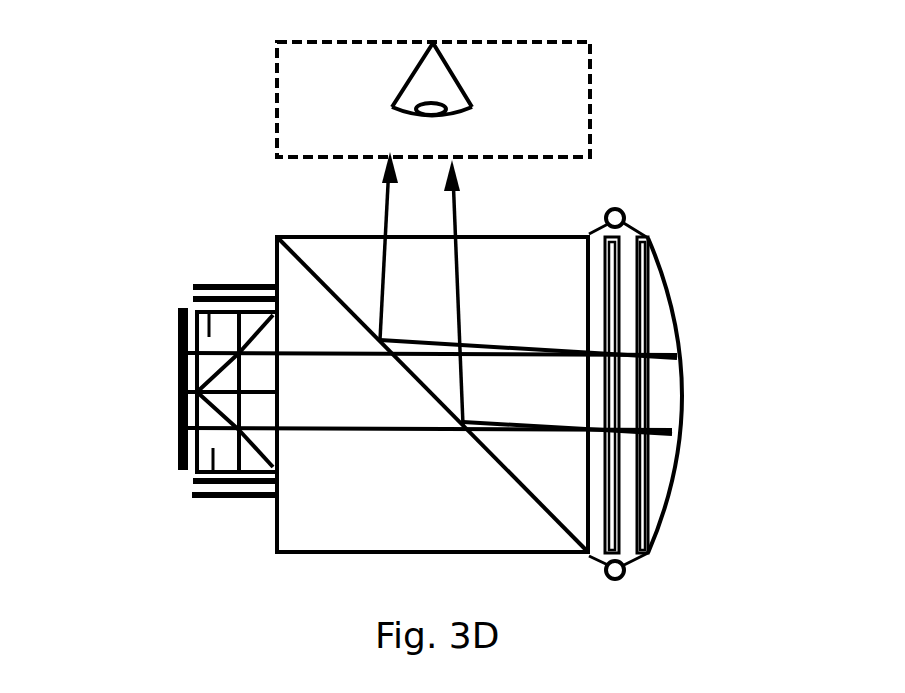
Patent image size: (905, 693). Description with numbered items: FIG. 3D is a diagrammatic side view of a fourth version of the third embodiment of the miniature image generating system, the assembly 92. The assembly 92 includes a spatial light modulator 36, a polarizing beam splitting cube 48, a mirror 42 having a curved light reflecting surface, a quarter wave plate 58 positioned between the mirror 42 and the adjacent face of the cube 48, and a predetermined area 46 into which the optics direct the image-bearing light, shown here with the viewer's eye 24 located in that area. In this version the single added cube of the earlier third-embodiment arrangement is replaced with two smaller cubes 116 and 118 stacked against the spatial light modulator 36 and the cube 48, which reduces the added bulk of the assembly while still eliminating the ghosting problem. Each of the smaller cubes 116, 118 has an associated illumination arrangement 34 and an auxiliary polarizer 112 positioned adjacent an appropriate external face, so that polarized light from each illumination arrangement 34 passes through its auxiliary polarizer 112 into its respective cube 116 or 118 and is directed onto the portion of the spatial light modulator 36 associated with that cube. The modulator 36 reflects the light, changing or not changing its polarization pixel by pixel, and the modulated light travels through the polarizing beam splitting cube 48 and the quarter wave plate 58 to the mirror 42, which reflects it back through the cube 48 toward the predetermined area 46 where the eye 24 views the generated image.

The viewer's eye 24 is at (442, 85).
The illumination arrangement 34 is at (223, 282).
The spatial light modulator 36 is at (178, 390).
The mirror 42 is at (655, 480).
The predetermined area 46 is at (305, 103).
The polarizing beam splitting cube 48 is at (318, 533).
The quarter wave plate 58 is at (612, 537).
The third embodiment assembly 92 is at (610, 170).
The auxiliary polarizer 112 is at (270, 282).
The smaller cube 116 is at (206, 305).
The smaller cube 118 is at (212, 487).